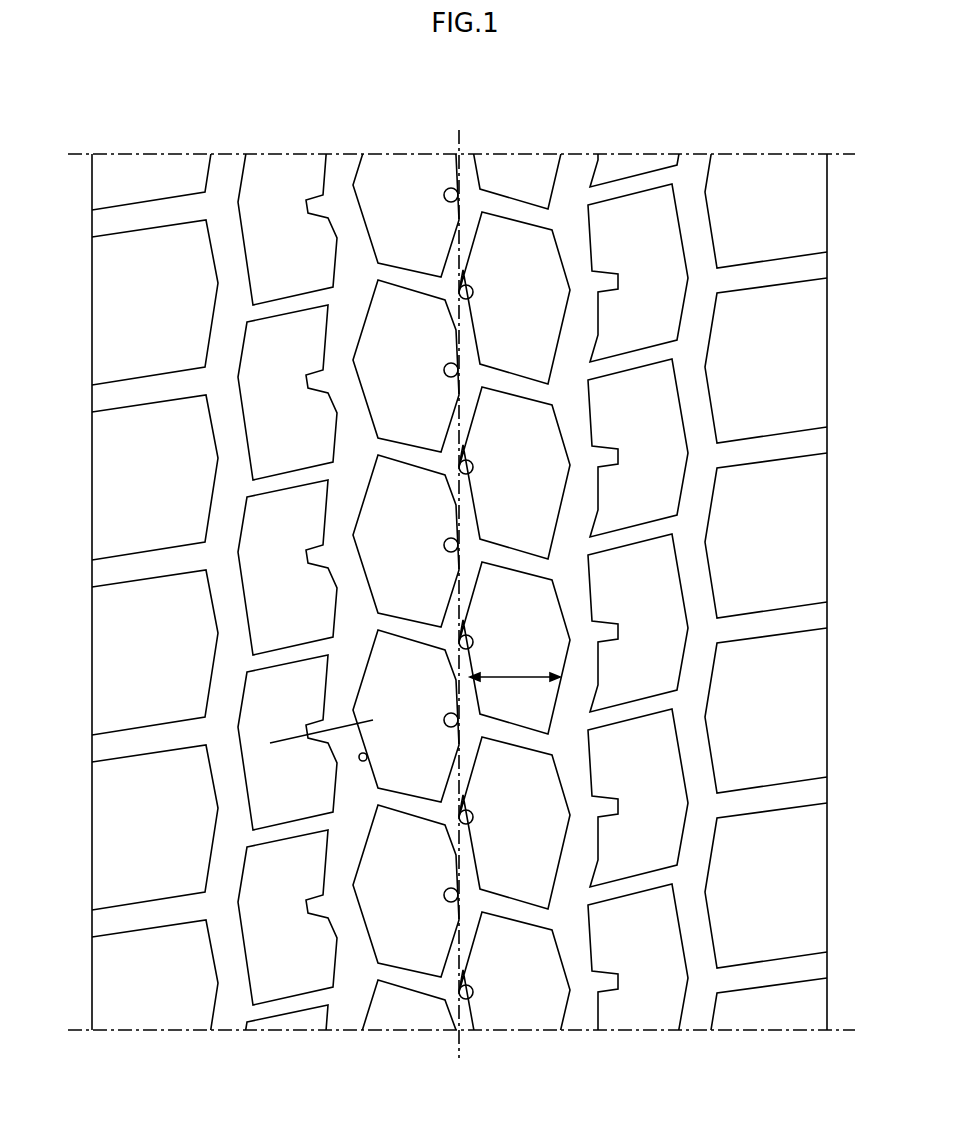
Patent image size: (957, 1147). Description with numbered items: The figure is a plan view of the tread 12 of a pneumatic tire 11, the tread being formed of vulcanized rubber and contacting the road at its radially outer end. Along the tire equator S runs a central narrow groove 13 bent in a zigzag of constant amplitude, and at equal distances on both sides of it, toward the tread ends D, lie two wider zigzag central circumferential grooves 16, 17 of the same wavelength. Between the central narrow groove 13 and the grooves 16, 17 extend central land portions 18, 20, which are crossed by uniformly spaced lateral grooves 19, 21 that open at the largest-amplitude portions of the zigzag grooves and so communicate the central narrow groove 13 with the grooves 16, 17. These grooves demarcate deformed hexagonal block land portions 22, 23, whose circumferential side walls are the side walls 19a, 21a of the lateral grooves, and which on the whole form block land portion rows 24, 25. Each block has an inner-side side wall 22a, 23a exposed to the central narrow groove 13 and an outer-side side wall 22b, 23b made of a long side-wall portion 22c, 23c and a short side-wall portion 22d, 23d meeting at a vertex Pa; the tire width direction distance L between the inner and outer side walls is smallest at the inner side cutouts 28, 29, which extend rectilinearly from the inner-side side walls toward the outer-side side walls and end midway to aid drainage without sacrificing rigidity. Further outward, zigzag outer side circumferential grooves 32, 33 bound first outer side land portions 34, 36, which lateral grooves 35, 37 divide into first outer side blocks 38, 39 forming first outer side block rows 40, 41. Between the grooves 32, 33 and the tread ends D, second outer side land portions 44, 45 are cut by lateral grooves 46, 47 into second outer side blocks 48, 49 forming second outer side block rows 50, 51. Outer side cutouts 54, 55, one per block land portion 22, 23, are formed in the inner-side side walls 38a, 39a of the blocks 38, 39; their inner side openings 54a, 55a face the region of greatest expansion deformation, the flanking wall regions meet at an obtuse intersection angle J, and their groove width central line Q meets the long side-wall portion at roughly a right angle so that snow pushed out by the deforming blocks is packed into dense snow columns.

The pneumatic tire 11 is at (660, 126).
The tread 12 is at (787, 152).
The central narrow groove 13 is at (450, 252).
The central circumferential groove 16 is at (346, 158).
The central circumferential groove 17 is at (582, 155).
The central land portion 18 is at (368, 1045).
The lateral groove 19 is at (394, 975).
The side wall 19a is at (375, 1033).
The central land portion 20 is at (552, 1033).
The lateral groove 21 is at (514, 560).
The side wall 21a is at (550, 955).
The block land portion 22 is at (406, 626).
The inner-side side wall 22a is at (475, 803).
The outer-side side wall 22b is at (358, 707).
The long side-wall portion 22c is at (366, 757).
The short side-wall portion 22d is at (363, 655).
The block land portion 23 is at (597, 860).
The inner-side side wall 23a is at (472, 577).
The outer-side side wall 23b is at (580, 605).
The long side-wall portion 23c is at (612, 628).
The short side-wall portion 23d is at (580, 728).
The block land portion row 24 is at (357, 1033).
The block land portion row 25 is at (492, 1035).
The inner side cutout 28 is at (446, 545).
The inner side cutout 29 is at (435, 645).
The outer side circumferential groove 32 is at (228, 158).
The outer side circumferential groove 33 is at (702, 158).
The first outer side land portion 34 is at (287, 638).
The lateral groove 35 is at (293, 303).
The first outer side land portion 36 is at (638, 535).
The lateral groove 37 is at (633, 185).
The first outer side block 38 is at (298, 330).
The inner-side side wall 38a is at (337, 413).
The first outer side block 39 is at (610, 218).
The inner-side side wall 39a is at (615, 335).
The first outer side block row 40 is at (250, 1033).
The first outer side block row 41 is at (630, 1033).
The second outer side land portion 44 is at (155, 565).
The second outer side land portion 45 is at (766, 623).
The lateral groove 46 is at (123, 212).
The lateral groove 47 is at (805, 272).
The second outer side block 48 is at (137, 357).
The second outer side block 49 is at (783, 417).
The second outer side block row 50 is at (195, 152).
The second outer side block row 51 is at (737, 138).
The outer side cutout 54 is at (318, 377).
The tire width direction inner side opening 54a is at (322, 900).
The outer side cutout 55 is at (612, 460).
The tire width direction inner side opening 55a is at (603, 808).
The tire equator S is at (462, 150).
The tread end D is at (90, 625).
The tire width direction distance L is at (515, 662).
The intersection angle J is at (335, 600).
The groove width central line Q is at (305, 735).
The vertex Pa is at (358, 358).